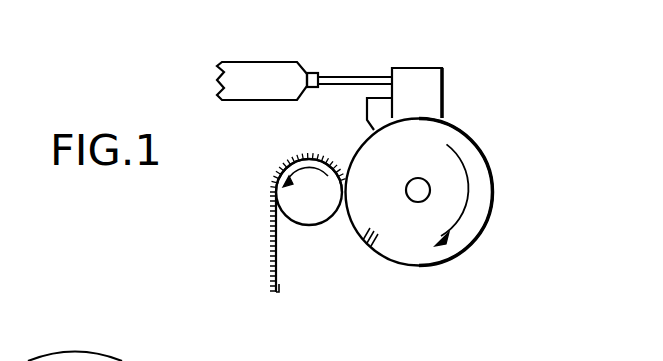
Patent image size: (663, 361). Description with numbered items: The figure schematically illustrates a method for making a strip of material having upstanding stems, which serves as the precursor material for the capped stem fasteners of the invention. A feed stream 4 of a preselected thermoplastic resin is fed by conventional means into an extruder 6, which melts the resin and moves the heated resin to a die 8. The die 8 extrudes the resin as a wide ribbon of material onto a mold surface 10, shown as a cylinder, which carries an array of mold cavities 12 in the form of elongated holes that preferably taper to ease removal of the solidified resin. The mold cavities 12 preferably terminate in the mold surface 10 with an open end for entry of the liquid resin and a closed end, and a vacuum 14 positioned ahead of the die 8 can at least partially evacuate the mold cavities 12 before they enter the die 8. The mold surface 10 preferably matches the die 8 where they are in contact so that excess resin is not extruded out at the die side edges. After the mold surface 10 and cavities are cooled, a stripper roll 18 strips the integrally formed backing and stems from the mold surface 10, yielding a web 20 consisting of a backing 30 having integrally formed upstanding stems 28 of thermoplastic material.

The feed stream 4 is at (200, 67).
The extruder 6 is at (236, 60).
The die 8 is at (418, 68).
The mold surface 10 is at (478, 147).
The mold cavities 12 is at (368, 240).
The vacuum 14 is at (367, 105).
The stripper roll 18 is at (304, 224).
The web 20 is at (252, 237).
The upstanding stems 28 is at (270, 295).
The backing 30 is at (280, 270).